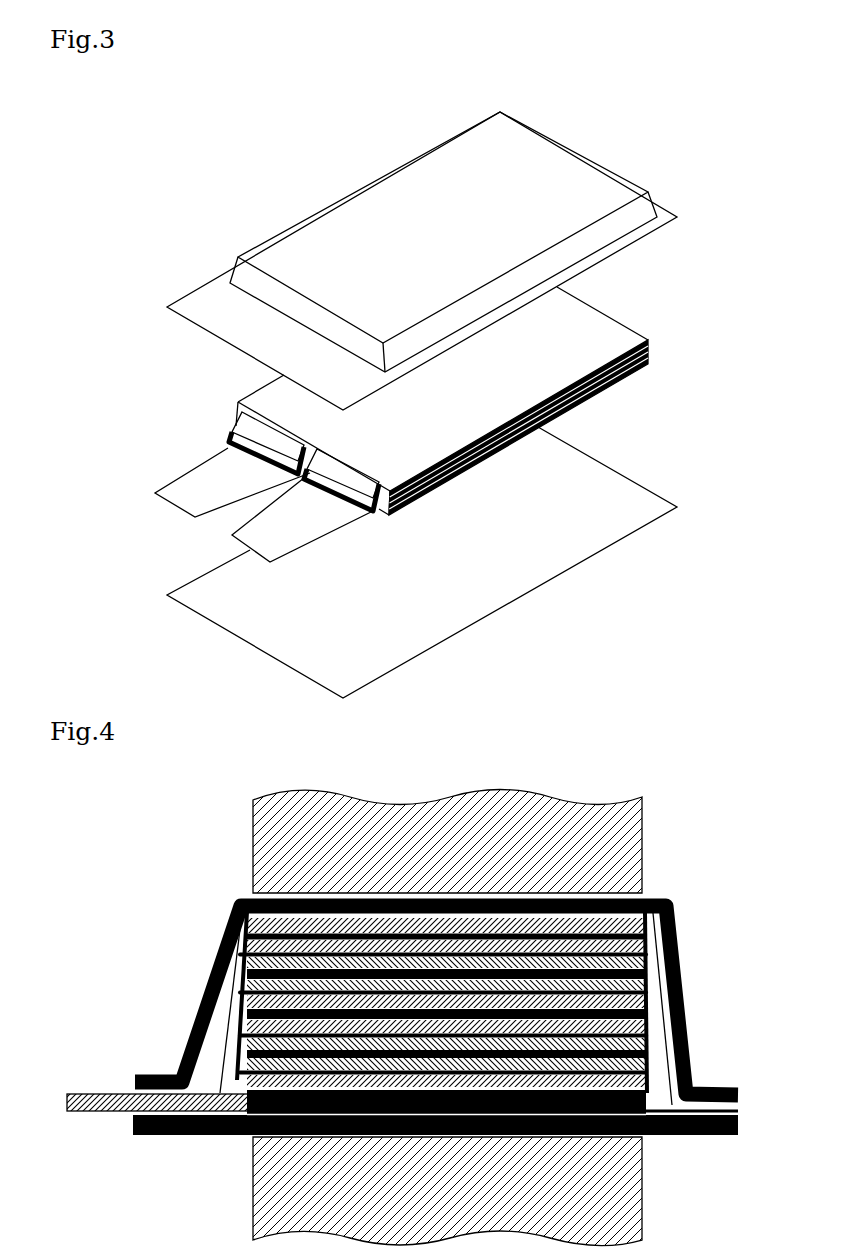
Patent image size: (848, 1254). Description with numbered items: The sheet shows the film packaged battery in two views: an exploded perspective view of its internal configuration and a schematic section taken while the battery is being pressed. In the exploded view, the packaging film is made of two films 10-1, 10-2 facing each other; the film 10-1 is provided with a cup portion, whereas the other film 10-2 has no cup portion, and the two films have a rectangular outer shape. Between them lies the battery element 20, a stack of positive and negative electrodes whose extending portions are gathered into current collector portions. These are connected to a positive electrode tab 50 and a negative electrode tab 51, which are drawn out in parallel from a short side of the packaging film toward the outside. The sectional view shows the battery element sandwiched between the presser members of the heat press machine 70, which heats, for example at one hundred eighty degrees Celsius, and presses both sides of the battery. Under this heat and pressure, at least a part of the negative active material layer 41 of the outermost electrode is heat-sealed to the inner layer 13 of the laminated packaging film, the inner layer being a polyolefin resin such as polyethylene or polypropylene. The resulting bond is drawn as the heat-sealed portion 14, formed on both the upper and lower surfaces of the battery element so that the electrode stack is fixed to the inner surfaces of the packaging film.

In FIG. 3, the film 10-1 is at (515, 170).
In FIG. 3, the film 10-2 is at (546, 530).
In FIG. 3, the battery element 20 is at (590, 326).
In FIG. 3, the positive electrode tab 50 is at (215, 485).
In FIG. 3, the negative electrode tab 51 is at (292, 523).
In FIG. 4, the heat press machine 70 is at (625, 850).
In FIG. 4, the heat-sealed portion 14 is at (652, 893).
In FIG. 4, the negative active material layer 41 is at (647, 1100).
In FIG. 4, the inner layer 13 is at (178, 1038).